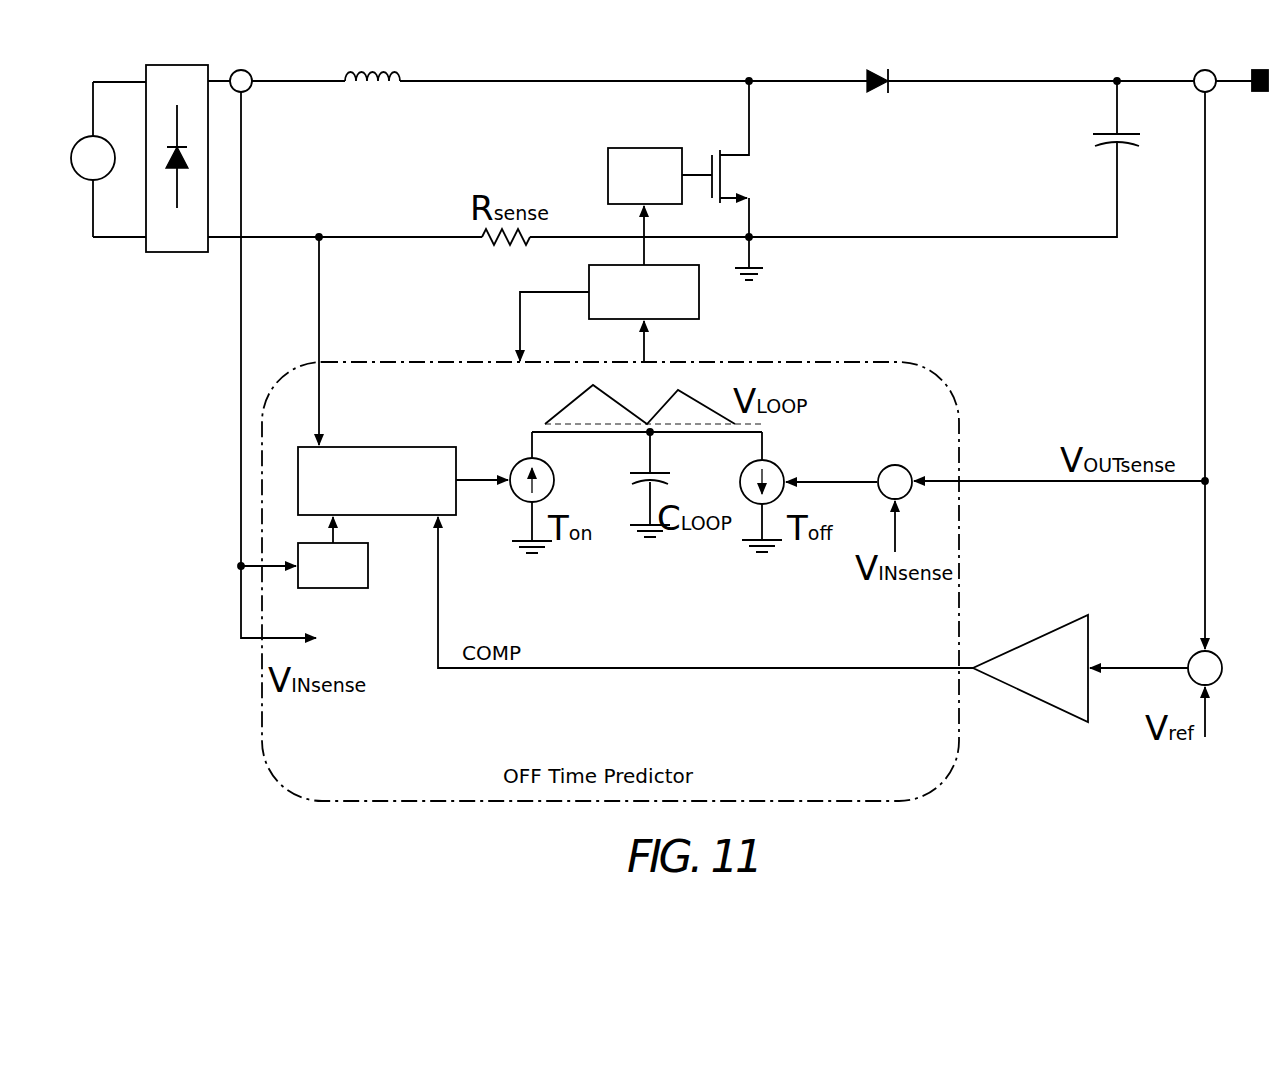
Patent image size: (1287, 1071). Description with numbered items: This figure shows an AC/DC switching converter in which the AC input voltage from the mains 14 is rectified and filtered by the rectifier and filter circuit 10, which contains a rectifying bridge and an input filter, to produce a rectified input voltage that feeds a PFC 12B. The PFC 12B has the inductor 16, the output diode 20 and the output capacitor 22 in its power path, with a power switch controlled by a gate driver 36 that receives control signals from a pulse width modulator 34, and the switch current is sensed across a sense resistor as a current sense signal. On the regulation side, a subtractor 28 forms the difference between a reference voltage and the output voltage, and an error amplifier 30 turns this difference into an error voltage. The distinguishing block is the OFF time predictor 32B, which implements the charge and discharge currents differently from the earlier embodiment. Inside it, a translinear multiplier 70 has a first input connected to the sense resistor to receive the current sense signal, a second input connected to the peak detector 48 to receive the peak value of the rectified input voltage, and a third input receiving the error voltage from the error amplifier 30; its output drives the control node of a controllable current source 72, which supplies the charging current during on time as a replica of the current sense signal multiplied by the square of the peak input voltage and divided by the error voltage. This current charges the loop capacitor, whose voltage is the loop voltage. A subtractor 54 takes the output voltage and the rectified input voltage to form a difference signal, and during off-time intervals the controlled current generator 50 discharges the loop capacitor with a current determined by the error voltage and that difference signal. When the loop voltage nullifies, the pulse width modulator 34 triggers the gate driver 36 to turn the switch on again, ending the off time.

The rectifier and filter circuit 10 is at (177, 65).
The mains 14 is at (70, 155).
The inductor 16 is at (372, 70).
The output diode 20 is at (879, 69).
The output capacitor 22 is at (1106, 133).
The PFC 12B is at (1056, 58).
The gate driver 36 is at (645, 148).
The pulse width modulator 34 is at (687, 319).
The OFF time predictor 32B is at (890, 362).
The translinear multiplier 70 is at (445, 447).
The controllable current source 72 is at (554, 480).
The controlled current generator 50 is at (780, 462).
The subtractor 54 is at (903, 465).
The peak detector (VPP) 48 is at (355, 588).
The error amplifier 30 is at (1033, 640).
The subtractor 28 is at (1223, 668).